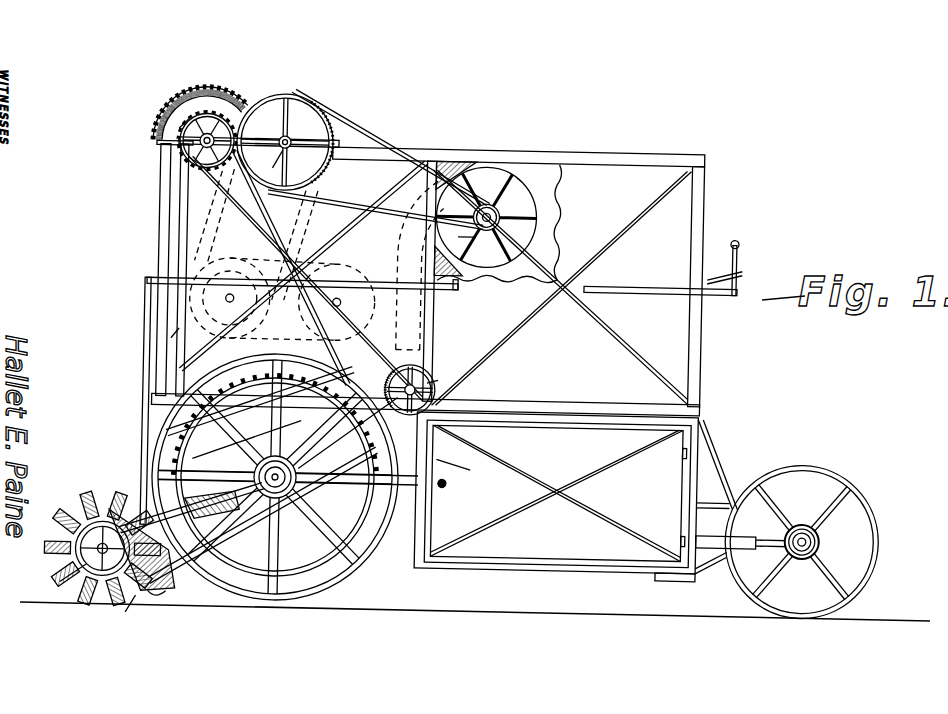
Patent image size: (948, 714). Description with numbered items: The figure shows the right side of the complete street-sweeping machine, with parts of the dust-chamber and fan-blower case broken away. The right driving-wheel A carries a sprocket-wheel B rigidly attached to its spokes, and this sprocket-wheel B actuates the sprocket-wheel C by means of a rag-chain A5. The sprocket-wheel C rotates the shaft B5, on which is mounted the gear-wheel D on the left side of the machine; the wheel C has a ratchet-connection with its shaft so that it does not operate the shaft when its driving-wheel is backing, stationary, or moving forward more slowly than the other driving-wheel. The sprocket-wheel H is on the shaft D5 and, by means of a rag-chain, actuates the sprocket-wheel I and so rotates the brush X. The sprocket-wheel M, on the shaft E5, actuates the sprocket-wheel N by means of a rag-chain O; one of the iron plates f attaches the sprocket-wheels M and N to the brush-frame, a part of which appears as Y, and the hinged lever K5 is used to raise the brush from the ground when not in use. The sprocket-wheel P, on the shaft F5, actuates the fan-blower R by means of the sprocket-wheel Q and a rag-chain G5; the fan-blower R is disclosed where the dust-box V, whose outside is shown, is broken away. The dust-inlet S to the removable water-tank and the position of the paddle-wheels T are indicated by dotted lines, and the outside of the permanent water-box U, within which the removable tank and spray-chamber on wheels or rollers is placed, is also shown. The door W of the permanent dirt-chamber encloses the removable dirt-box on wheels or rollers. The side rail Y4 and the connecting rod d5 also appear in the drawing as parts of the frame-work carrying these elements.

The right driving-wheel A is at (240, 610).
The sprocket-wheel B is at (360, 588).
The sprocket-wheel C is at (210, 168).
The gear-wheel D is at (210, 92).
The sprocket-wheel P is at (322, 176).
The sprocket-wheel Q is at (496, 212).
The fan-blower R is at (486, 225).
The sprocket-wheel H is at (424, 372).
The dust-box V is at (428, 275).
The door of the permanent dirt-chamber W is at (556, 497).
The sprocket-wheel M is at (458, 469).
The brush X is at (94, 548).
The sprocket-wheel I is at (59, 579).
The sprocket-wheel N is at (150, 598).
The iron plate f is at (125, 614).
The rag-chain O is at (213, 515).
The permanent water-box U is at (264, 265).
The paddle-wheels T is at (337, 302).
The dust-inlet S is at (420, 266).
The brush-frame Y is at (212, 504).
The shaft B5 is at (172, 128).
The shaft D5 is at (440, 378).
The shaft E5 is at (308, 315).
The shaft F5 is at (272, 164).
The rag-chain G5 is at (322, 205).
The hinged lever K5 is at (430, 382).
The side rail Y4 is at (738, 409).
The rag-chain A5 is at (166, 342).
The connecting rod d5 is at (246, 439).